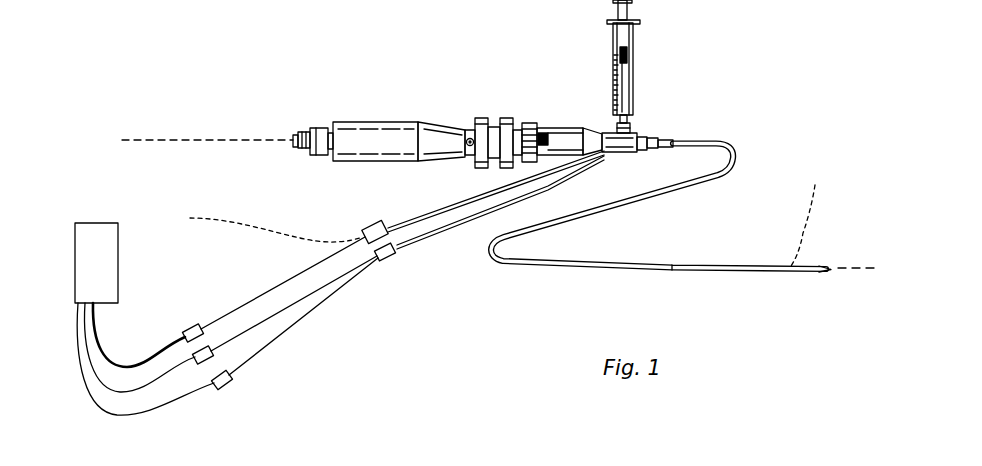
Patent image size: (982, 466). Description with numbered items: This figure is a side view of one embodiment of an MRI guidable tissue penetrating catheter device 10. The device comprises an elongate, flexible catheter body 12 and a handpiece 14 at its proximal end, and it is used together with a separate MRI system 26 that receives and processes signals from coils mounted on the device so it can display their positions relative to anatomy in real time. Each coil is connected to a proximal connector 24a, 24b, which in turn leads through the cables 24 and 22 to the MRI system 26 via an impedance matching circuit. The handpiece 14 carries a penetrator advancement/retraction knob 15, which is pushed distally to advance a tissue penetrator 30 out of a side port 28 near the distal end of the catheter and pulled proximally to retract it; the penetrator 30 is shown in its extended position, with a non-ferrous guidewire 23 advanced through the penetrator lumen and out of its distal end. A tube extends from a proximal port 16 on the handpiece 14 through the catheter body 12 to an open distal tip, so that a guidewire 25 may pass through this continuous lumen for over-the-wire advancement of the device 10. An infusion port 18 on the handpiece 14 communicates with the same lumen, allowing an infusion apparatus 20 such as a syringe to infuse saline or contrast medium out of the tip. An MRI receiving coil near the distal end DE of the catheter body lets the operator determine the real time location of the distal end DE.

The MRI guidable tissue penetrating catheter device 10 is at (489, 173).
The catheter body 12 is at (577, 268).
The handpiece 14 is at (442, 128).
The penetrator advancement/retraction knob 15 is at (490, 120).
The proximal port 16 is at (293, 140).
The infusion port 18 is at (618, 128).
The infusion apparatus 20 is at (632, 52).
The sheath side arms 22 is at (440, 230).
The non-ferrous guidewire 23 is at (207, 217).
The electrical lead 24 is at (263, 302).
The proximal connector 24a is at (293, 303).
The proximal connector 24b is at (273, 340).
The guidewire 25 is at (162, 140).
The MRI system 26 is at (100, 230).
The side port 28 is at (772, 268).
The tissue penetrator 30 is at (790, 258).
The distal end DE is at (823, 271).